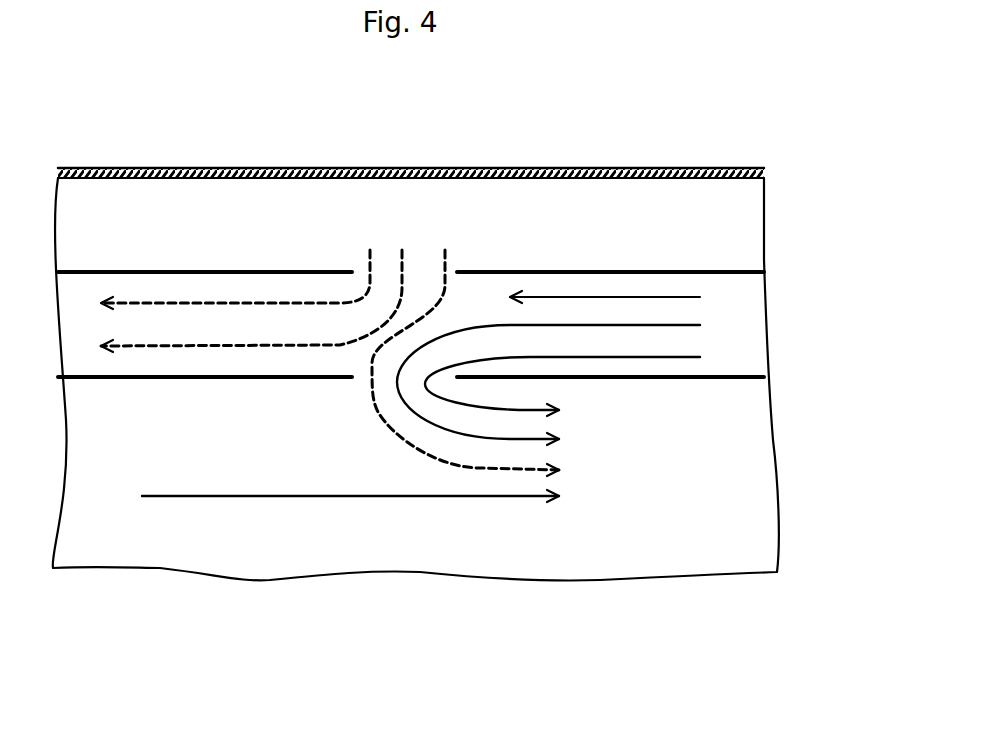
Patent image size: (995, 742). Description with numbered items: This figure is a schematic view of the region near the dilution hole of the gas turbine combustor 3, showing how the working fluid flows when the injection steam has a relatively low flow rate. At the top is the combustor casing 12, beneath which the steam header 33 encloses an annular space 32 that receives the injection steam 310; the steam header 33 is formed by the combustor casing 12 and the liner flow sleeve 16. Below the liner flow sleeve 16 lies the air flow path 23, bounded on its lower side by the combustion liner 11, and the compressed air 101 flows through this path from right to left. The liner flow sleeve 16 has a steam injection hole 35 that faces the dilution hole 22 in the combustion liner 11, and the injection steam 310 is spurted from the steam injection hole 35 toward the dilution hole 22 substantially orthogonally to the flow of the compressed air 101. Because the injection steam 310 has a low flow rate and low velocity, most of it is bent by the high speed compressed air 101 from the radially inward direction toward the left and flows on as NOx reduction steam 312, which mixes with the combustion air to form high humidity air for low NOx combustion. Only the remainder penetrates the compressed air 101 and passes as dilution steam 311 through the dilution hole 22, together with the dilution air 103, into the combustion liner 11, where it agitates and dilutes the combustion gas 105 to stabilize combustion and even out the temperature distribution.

The gas turbine combustor 3 is at (727, 93).
The combustor casing 12 is at (655, 168).
The steam header 33 is at (485, 160).
The annular space 32 is at (543, 239).
The liner flow sleeve 16 is at (720, 272).
The steam injection hole 35 is at (352, 272).
The air flow path 23 is at (723, 348).
The combustion liner 11 is at (737, 376).
The dilution hole 22 is at (352, 377).
The compressed air 101 is at (678, 323).
The dilution air 103 is at (527, 439).
The dilution steam 311 is at (527, 470).
The injection steam 310 is at (402, 280).
The NOx reduction steam 312 is at (220, 302).
The combustion gas 105 is at (383, 498).